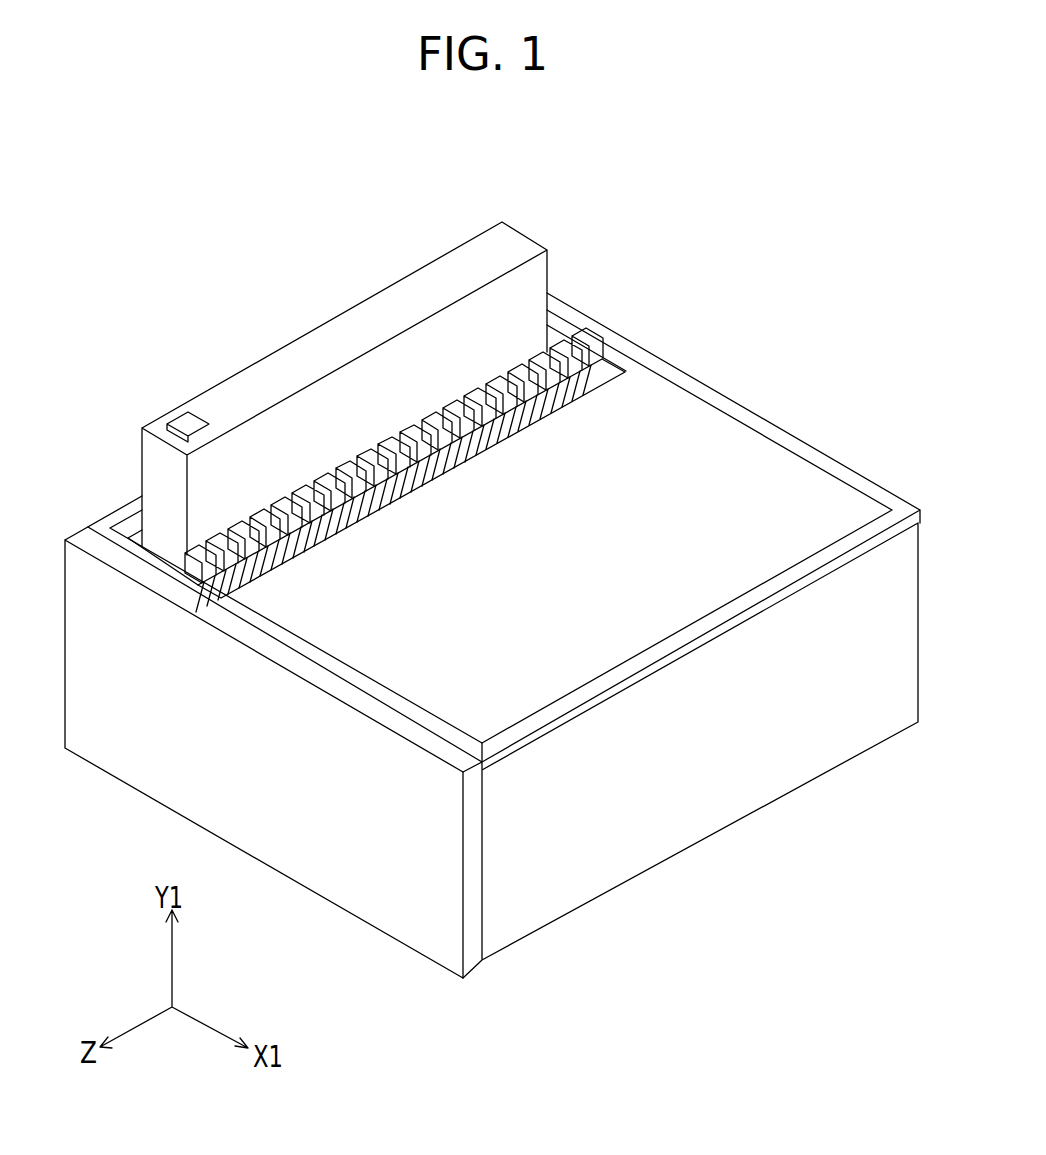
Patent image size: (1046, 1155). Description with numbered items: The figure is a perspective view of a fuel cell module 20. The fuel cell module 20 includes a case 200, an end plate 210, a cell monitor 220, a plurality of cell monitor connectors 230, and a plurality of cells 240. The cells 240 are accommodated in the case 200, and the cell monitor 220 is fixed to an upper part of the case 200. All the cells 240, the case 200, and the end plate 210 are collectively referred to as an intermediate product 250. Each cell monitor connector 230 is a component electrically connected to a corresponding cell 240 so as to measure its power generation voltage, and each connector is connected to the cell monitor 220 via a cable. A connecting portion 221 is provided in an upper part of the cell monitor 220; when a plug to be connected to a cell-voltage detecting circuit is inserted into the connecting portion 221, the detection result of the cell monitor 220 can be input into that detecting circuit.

The fuel cell module 20 is at (869, 281).
The case 200 is at (690, 803).
The end plate 210 is at (142, 753).
The cell monitor 220 is at (302, 350).
The connecting portion 221 is at (183, 417).
The cell monitor connector 230 is at (140, 500).
The cell 240 is at (610, 365).
The intermediate product 250 is at (748, 394).